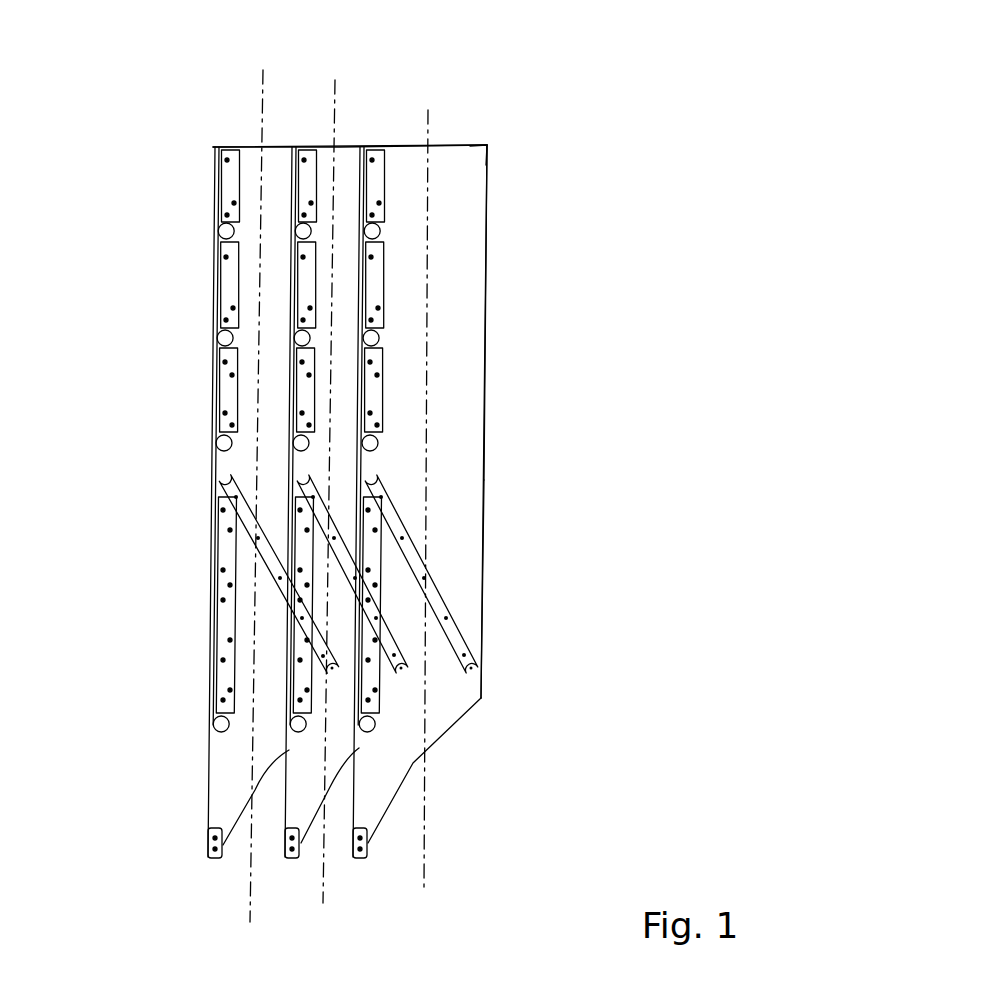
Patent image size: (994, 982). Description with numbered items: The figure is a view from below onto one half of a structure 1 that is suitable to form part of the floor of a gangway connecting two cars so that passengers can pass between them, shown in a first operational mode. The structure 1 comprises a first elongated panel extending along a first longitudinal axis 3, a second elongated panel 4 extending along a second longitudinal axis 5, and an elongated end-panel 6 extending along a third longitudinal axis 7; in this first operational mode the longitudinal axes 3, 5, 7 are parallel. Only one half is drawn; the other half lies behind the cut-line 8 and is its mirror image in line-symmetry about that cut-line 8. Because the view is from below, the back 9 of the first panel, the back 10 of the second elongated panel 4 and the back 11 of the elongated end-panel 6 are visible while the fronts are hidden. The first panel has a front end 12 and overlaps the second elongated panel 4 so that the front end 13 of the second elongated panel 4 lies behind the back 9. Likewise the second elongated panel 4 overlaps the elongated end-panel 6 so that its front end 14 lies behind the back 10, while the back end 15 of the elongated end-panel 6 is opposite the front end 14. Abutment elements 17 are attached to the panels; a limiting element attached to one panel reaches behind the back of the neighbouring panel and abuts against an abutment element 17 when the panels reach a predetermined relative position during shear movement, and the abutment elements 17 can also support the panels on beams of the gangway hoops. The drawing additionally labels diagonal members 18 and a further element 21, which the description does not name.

The structure 1 is at (580, 275).
The first longitudinal axis 3 is at (252, 515).
The second elongated panel 4 is at (348, 153).
The second longitudinal axis 5 is at (325, 516).
The elongated end-panel 6 is at (462, 160).
The third longitudinal axis 7 is at (422, 525).
The cut-line 8 is at (500, 145).
The back of first elongated panel 9 is at (237, 462).
The back of second elongated panel 10 is at (323, 460).
The back of elongated end-panel 11 is at (450, 483).
The front end of first elongated panel 12 is at (208, 333).
The front end of second elongated panel 13 is at (285, 390).
The front end of elongated end-panel 14 is at (352, 427).
The back end of elongated end-panel 15 is at (492, 420).
The abutment element 17 is at (373, 222).
The diagonal struts 18 is at (335, 671).
The panel element 21 is at (268, 155).